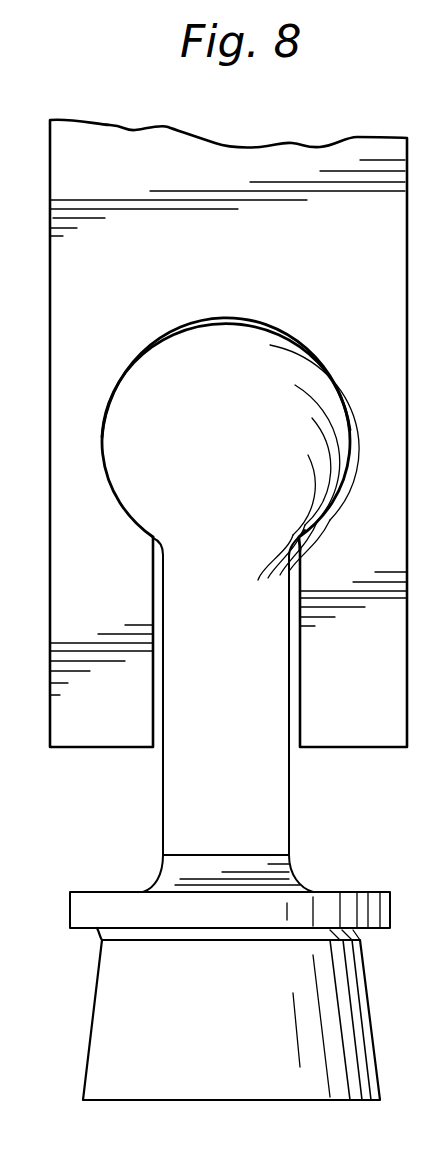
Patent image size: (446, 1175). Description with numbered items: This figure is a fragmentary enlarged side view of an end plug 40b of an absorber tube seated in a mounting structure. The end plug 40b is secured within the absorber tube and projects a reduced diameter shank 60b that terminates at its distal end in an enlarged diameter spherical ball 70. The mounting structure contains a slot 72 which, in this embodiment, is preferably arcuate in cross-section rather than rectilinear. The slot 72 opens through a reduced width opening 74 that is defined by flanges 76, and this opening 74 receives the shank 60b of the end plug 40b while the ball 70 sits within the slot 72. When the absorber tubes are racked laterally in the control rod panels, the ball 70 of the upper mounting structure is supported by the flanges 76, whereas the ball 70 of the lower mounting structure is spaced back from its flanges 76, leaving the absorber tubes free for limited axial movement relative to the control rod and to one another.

The end plug 40b is at (130, 981).
The shank 60b is at (260, 797).
The spherical ball 70 is at (298, 385).
The slot 72 is at (150, 305).
The reduced width opening 74 is at (158, 598).
The flanges 76 is at (100, 718).